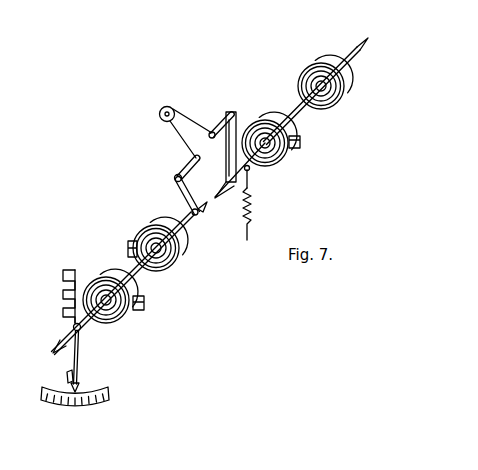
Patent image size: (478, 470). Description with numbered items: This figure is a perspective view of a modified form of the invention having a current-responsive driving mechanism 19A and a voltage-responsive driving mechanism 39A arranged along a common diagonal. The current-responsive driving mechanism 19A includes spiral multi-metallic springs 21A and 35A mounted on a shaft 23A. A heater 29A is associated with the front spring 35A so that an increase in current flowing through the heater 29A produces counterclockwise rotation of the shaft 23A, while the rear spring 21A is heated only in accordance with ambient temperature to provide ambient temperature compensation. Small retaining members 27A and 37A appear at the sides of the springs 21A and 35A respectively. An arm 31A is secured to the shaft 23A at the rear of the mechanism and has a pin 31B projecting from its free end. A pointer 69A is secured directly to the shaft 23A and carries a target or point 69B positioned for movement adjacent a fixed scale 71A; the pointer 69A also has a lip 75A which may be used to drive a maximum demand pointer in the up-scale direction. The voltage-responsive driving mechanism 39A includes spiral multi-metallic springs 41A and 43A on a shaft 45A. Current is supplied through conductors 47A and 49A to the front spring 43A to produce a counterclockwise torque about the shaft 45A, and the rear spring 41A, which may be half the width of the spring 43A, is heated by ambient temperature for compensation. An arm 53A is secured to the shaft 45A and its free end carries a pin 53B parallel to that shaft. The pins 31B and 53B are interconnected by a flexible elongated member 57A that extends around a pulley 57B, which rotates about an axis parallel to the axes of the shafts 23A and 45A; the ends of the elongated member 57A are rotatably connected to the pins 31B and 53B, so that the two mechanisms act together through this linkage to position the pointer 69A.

The current-responsive driving mechanism 19A is at (125, 273).
The spiral multi-metallic spring 21A is at (157, 222).
The shaft 23A is at (147, 268).
The clip 27A is at (128, 244).
The heater 29A is at (66, 297).
The arm 31A is at (177, 188).
The pin 31B is at (190, 165).
The spiral multi-metallic spring 35A is at (112, 320).
The clip 37A is at (145, 303).
The voltage-responsive driving mechanism 39A is at (310, 69).
The spiral multi-metallic spring 41A is at (346, 46).
The spiral multi-metallic spring 43A is at (273, 153).
The shaft 45A is at (365, 54).
The conductor 47A is at (300, 141).
The conductor 49A is at (250, 211).
The arm 53A is at (249, 170).
The pin 53B is at (222, 122).
The flexible elongated member 57A is at (194, 113).
The pulley 57B is at (159, 112).
The pointer 69A is at (79, 360).
The target or point 69B is at (78, 387).
The fixed scale 71A is at (72, 410).
The lip 75A is at (66, 375).